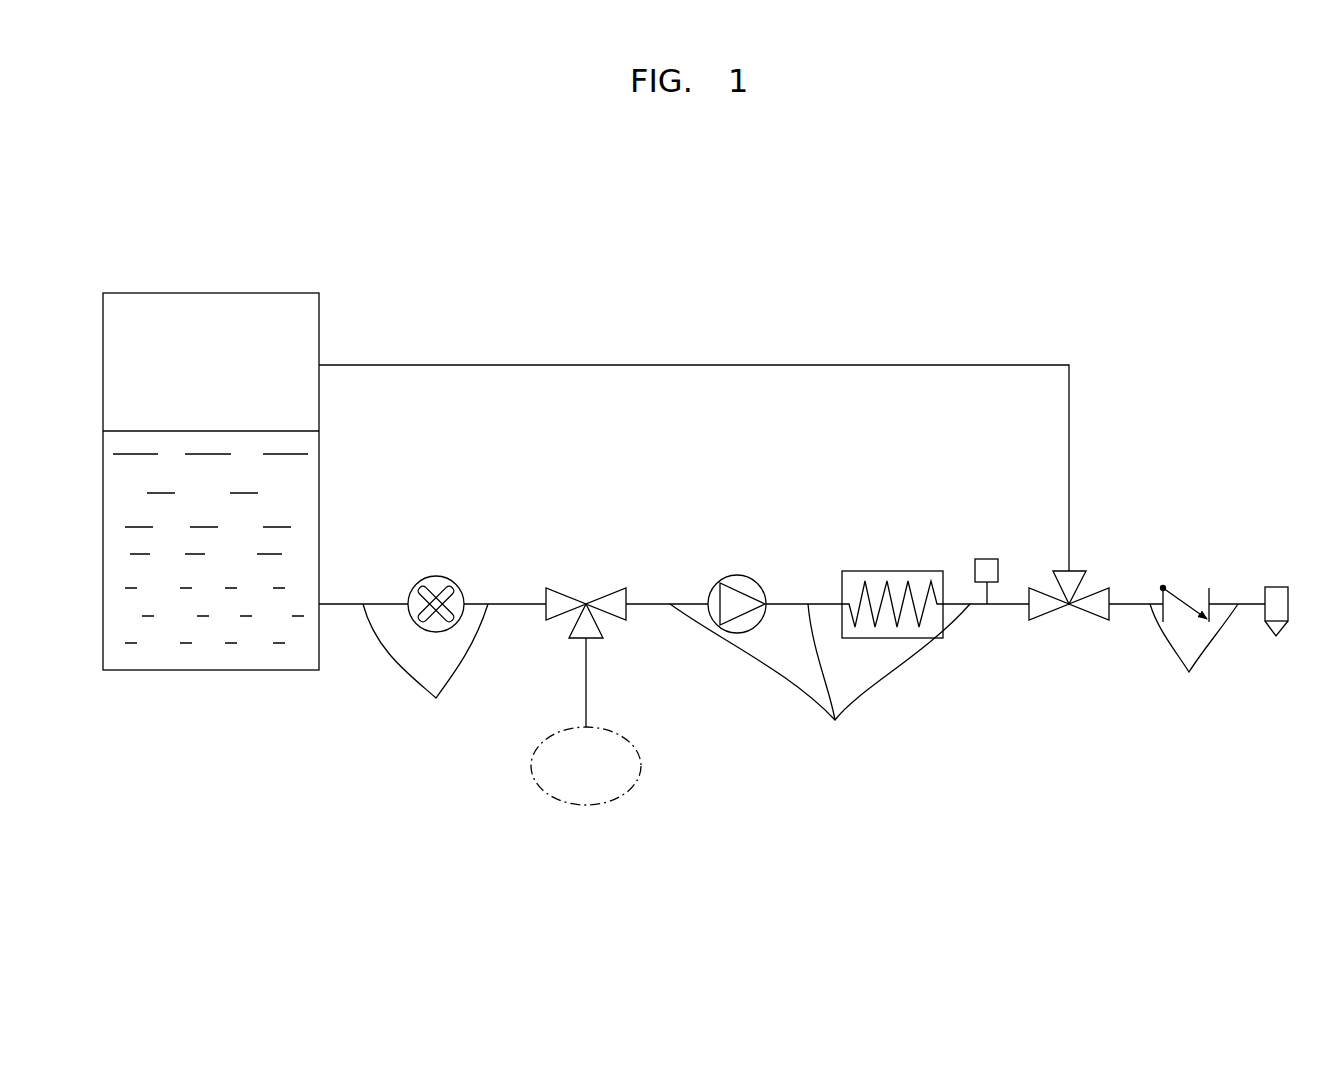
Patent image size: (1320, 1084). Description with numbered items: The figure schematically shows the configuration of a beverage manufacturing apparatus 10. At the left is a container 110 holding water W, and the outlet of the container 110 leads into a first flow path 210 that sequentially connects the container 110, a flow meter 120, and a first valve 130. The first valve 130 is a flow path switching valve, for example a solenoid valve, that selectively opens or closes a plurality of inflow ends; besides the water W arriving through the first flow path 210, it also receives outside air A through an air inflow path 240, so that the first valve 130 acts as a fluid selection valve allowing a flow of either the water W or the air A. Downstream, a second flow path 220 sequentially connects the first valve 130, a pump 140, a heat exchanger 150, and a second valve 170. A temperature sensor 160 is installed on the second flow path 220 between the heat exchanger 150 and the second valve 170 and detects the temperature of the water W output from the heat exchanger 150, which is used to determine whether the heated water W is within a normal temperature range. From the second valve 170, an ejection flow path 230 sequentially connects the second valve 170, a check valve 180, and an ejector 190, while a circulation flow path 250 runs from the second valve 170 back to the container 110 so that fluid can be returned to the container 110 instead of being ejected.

The beverage manufacturing apparatus 10 is at (893, 233).
The container 110 is at (247, 293).
The flow meter 120 is at (436, 576).
The first valve 130 is at (596, 576).
The pump 140 is at (742, 578).
The heat exchanger 150 is at (895, 571).
The temperature sensor 160 is at (989, 559).
The second valve 170 is at (1070, 623).
The check valve 180 is at (1187, 586).
The ejector 190 is at (1275, 587).
The first flow path 210 is at (425, 666).
The second flow path 220 is at (820, 678).
The ejection flow path 230 is at (1194, 653).
The air inflow path 240 is at (584, 684).
The circulation flow path 250 is at (722, 365).
The water W is at (253, 648).
The air A is at (603, 657).